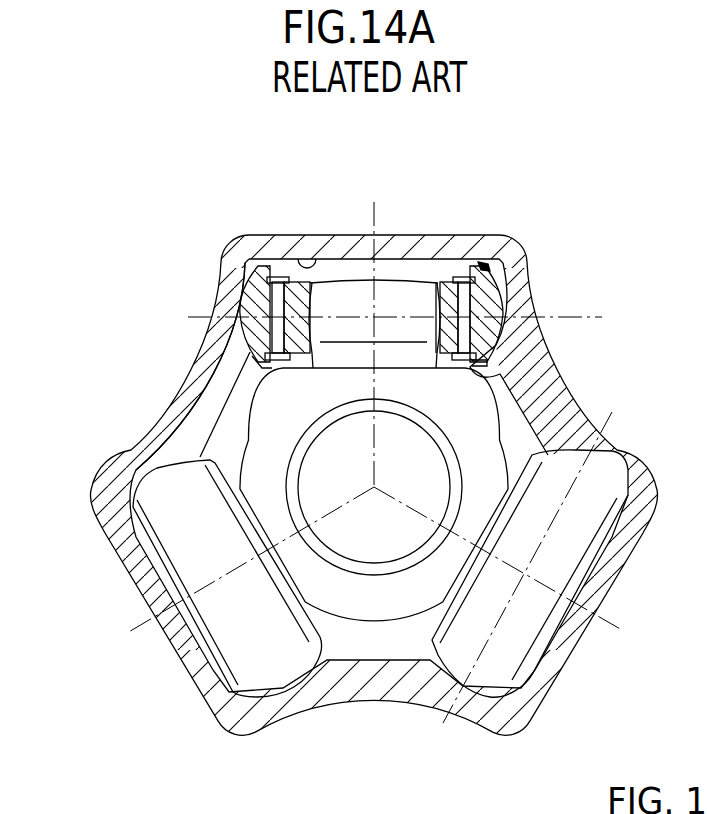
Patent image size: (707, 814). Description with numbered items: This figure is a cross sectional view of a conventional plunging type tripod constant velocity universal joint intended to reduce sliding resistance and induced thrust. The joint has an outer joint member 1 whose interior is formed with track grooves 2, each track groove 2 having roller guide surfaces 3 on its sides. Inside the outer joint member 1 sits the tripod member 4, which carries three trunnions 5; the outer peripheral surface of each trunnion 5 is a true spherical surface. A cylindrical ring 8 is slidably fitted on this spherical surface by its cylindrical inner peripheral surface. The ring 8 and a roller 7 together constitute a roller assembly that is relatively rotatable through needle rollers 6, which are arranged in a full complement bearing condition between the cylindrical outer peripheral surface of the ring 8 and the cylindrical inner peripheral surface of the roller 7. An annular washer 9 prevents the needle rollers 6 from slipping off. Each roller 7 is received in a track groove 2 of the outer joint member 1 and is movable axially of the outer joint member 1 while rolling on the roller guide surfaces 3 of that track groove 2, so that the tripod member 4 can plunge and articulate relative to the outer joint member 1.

The outer joint member 1 is at (227, 240).
The track groove 2 is at (296, 262).
The roller guide surfaces 3 is at (243, 311).
The tripod member 4 is at (367, 600).
The trunnions 5 is at (356, 300).
The needle rollers 6 is at (277, 332).
The roller 7 is at (240, 300).
The cylindrical ring 8 is at (440, 290).
The annular washer 9 is at (470, 268).